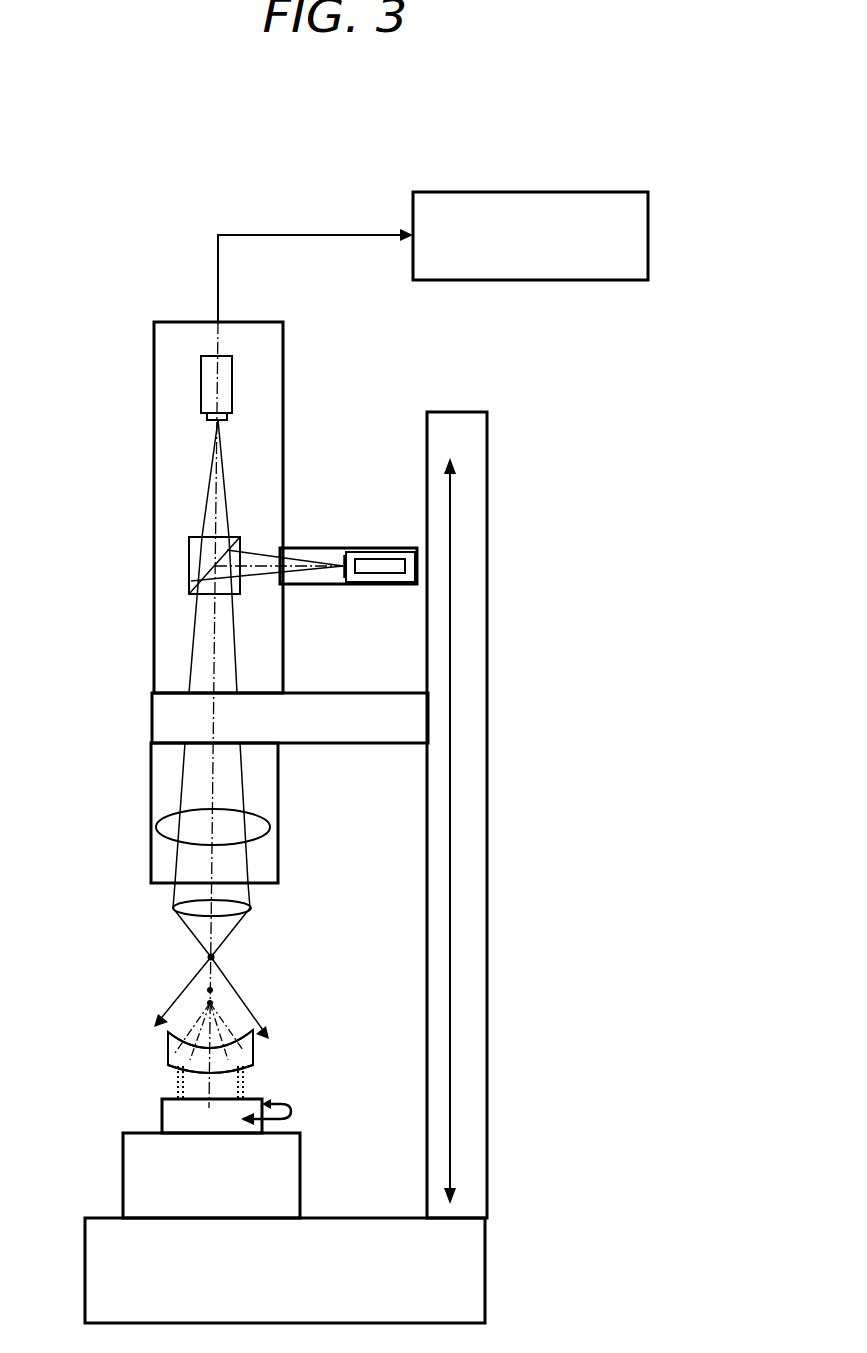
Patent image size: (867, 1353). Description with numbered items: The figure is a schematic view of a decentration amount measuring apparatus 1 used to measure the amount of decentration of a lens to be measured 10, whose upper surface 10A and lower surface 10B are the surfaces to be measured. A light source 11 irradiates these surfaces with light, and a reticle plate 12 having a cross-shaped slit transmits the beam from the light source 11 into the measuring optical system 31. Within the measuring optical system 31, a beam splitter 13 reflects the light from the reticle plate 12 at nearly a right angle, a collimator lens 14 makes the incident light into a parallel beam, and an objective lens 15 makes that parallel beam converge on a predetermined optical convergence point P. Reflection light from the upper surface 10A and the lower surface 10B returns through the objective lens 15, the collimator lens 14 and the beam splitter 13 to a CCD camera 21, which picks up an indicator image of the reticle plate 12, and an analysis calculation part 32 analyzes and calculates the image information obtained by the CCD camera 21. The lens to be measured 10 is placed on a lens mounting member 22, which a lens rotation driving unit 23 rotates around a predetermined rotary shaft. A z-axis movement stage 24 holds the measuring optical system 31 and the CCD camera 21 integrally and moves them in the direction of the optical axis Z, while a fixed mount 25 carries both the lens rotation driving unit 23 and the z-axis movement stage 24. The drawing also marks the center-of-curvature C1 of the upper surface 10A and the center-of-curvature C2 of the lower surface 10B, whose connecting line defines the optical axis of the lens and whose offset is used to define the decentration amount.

The decentration amount measuring apparatus 1 is at (365, 383).
The lens to be measured 10 is at (254, 1050).
The upper surface 10A is at (172, 1030).
The lower surface 10B is at (220, 1074).
The light source 11 is at (382, 560).
The reticle plate 12 is at (342, 556).
The beam splitter 13 is at (190, 546).
The collimator lens 14 is at (262, 826).
The objective lens 15 is at (247, 906).
The CCD camera 21 is at (200, 383).
The lens mounting member 22 is at (180, 1083).
The lens rotation driving unit 23 is at (108, 1095).
The z-axis movement stage 24 is at (502, 690).
The fixed mount 25 is at (447, 1283).
The measuring optical system 31 is at (128, 644).
The analysis calculation part 32 is at (600, 192).
The optical convergence point P is at (216, 957).
The center-of-curvature of the upper surface C1 is at (215, 990).
The center-of-curvature of the lower surface C2 is at (202, 1000).
The optical axis Z is at (212, 680).